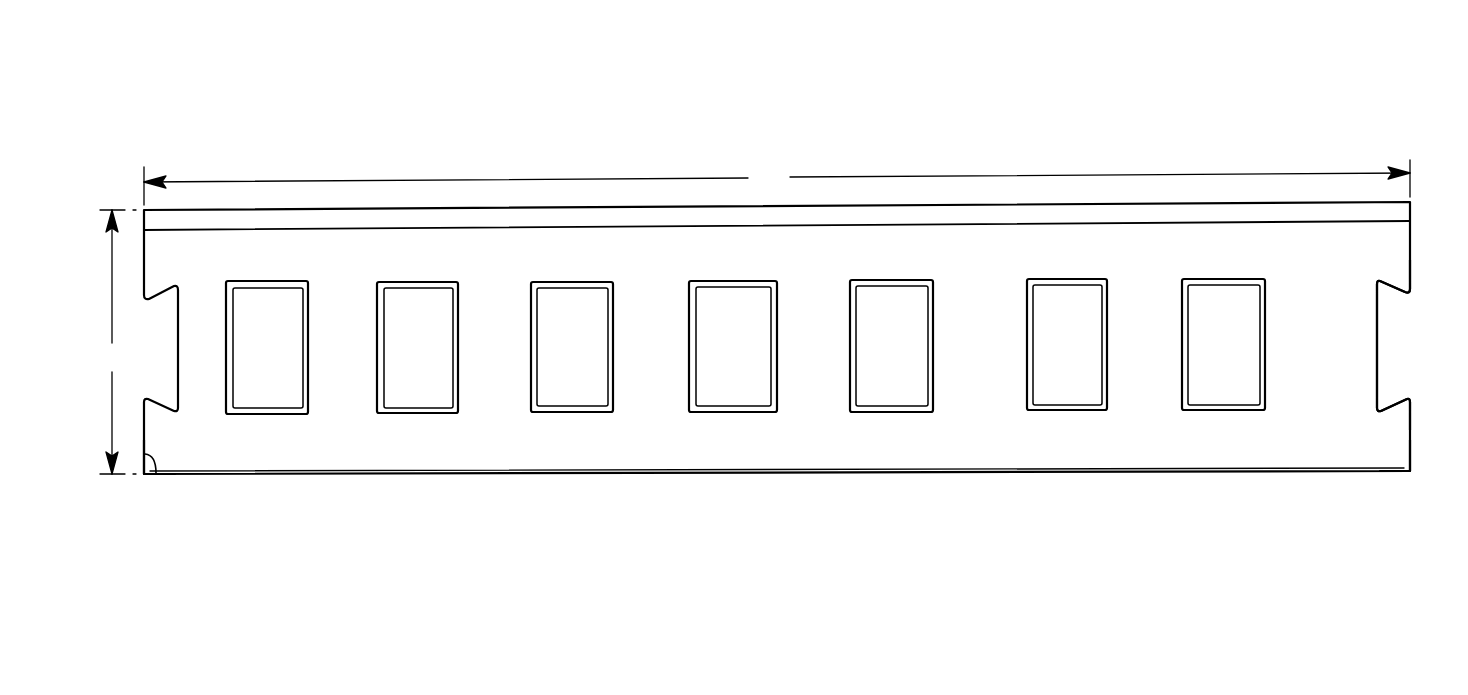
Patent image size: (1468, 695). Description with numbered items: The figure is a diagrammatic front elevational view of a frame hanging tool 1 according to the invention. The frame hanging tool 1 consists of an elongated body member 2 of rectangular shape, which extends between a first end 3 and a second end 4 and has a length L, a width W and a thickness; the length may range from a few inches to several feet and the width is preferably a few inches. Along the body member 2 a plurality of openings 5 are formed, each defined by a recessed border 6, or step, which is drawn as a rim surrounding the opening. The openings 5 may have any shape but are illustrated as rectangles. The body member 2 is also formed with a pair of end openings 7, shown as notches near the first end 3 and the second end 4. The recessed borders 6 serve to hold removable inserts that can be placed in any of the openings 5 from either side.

The frame hanging tool 1 is at (1117, 92).
The body member 2 is at (1210, 455).
The first end 3 is at (1403, 446).
The second end 4 is at (155, 474).
The openings 5 is at (750, 393).
The recessed borders 6 is at (377, 380).
The end openings 7 is at (1392, 328).